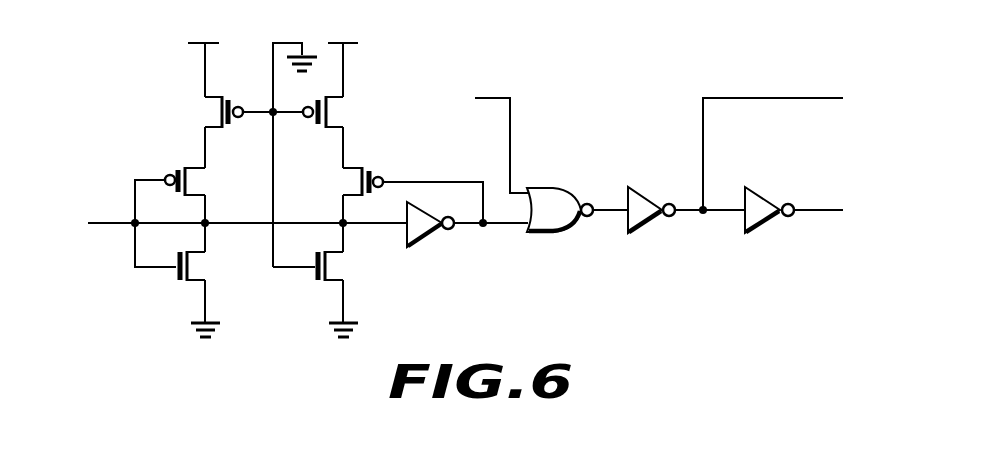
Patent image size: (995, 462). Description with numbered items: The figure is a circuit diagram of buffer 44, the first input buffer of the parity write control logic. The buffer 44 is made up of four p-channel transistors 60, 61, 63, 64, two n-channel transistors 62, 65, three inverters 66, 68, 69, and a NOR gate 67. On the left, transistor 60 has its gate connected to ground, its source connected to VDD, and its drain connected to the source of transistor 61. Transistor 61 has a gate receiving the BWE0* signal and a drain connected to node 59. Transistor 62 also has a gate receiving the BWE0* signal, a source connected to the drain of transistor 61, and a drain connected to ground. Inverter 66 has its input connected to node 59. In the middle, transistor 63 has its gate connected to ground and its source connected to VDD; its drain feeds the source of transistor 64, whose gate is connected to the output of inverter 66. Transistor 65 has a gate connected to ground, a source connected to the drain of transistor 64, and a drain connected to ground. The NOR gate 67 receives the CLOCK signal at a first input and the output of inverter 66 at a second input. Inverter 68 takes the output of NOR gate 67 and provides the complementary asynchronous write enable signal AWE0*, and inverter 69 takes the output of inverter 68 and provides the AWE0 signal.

The buffer 44 is at (604, 38).
The node 59 is at (207, 221).
The p-channel transistor 60 is at (203, 113).
The p-channel transistor 61 is at (187, 167).
The n-channel transistor 62 is at (190, 283).
The p-channel transistor 63 is at (342, 113).
The p-channel transistor 64 is at (358, 168).
The n-channel transistor 65 is at (329, 283).
The inverter 66 is at (432, 239).
The NOR gate 67 is at (572, 227).
The inverter 68 is at (650, 236).
The inverter 69 is at (767, 236).